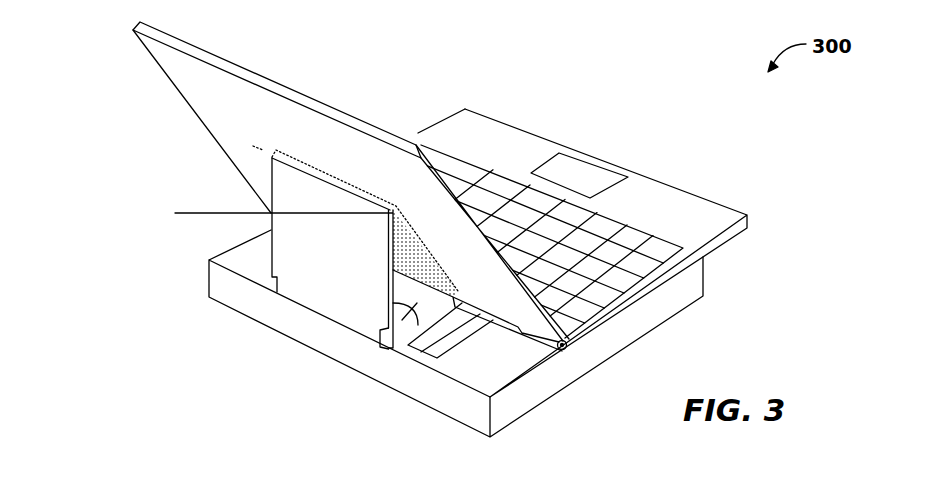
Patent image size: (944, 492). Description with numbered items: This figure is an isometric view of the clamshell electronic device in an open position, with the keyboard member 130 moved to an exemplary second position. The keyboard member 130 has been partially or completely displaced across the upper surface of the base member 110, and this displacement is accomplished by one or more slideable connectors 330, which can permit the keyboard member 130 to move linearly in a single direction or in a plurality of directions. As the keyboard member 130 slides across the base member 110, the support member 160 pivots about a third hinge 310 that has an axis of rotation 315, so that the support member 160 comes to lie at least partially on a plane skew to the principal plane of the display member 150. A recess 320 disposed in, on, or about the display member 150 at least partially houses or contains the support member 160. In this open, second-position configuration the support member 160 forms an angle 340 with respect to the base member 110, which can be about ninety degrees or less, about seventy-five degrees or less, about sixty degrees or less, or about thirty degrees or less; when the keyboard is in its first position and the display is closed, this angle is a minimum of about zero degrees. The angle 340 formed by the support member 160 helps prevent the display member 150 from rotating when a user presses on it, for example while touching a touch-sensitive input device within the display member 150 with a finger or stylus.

The base member 110 is at (660, 300).
The keyboard member 130 is at (728, 237).
The display member 150 is at (138, 30).
The support member 160 is at (327, 254).
The third hinge 310 is at (180, 213).
The axis of rotation 315 is at (432, 230).
The recess 320 is at (415, 266).
The slideable connector 330 is at (408, 345).
The angle 340 is at (390, 339).